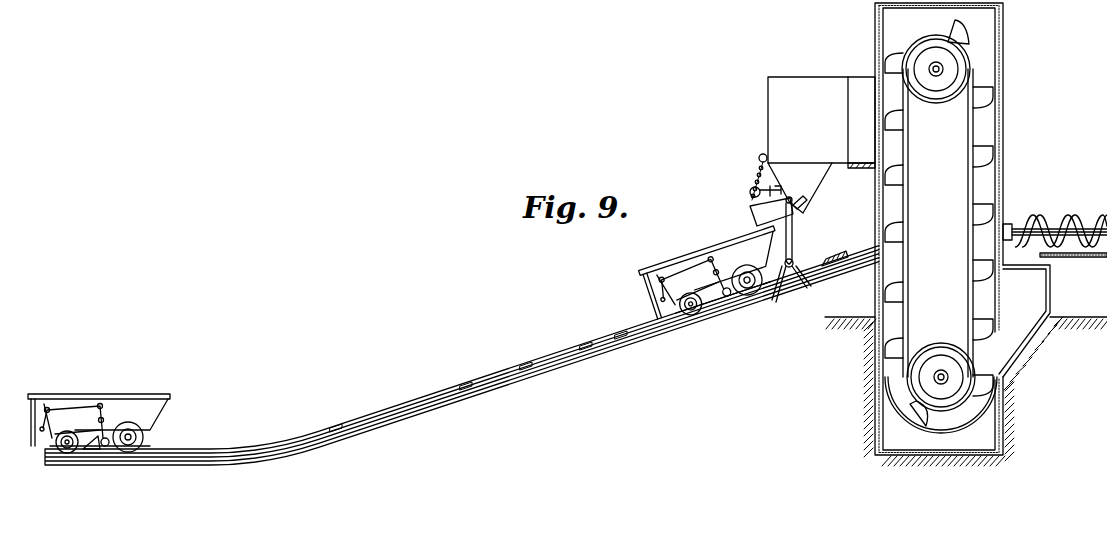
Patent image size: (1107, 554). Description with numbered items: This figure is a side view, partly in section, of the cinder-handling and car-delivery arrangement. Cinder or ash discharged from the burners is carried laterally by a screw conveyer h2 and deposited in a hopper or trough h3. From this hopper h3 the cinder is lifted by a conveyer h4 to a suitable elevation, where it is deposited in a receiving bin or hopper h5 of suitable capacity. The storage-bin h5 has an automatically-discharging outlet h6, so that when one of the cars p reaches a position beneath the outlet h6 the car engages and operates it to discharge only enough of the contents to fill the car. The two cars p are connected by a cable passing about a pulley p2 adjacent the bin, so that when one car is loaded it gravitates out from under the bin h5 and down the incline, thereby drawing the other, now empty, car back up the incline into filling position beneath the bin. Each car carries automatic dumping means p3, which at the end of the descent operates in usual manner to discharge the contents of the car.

The screw conveyer h2 is at (1063, 222).
The hopper or trough h3 is at (1030, 303).
The conveyer h4 is at (910, 167).
The receiving bin or hopper h5 is at (828, 72).
The outlet h6 is at (768, 214).
The car p is at (105, 393).
The pulley p2 is at (845, 250).
The automatic dumping means p3 is at (386, 350).